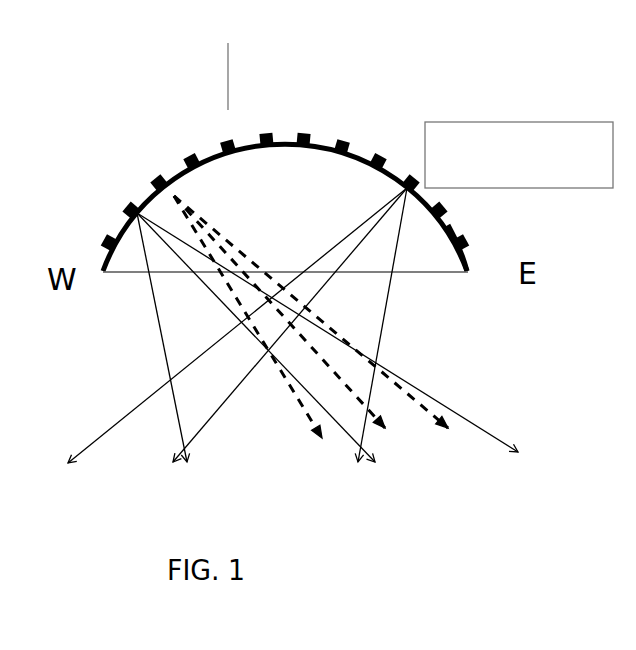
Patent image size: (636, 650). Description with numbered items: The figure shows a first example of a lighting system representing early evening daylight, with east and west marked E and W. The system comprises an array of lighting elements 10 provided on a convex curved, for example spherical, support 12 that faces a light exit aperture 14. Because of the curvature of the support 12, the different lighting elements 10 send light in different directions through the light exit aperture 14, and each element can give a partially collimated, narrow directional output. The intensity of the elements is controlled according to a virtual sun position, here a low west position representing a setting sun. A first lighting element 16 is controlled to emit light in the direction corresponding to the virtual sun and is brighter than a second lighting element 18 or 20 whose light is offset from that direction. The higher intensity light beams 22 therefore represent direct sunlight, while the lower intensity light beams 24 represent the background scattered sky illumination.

The lighting elements 10 is at (307, 132).
The support 12 is at (468, 266).
The light exit aperture 14 is at (417, 275).
The first lighting element 16 is at (158, 183).
The second lighting element 18 is at (125, 208).
The second lighting element 20 is at (410, 186).
The higher intensity light beams 22 is at (418, 410).
The lower intensity light beams 24 is at (217, 412).